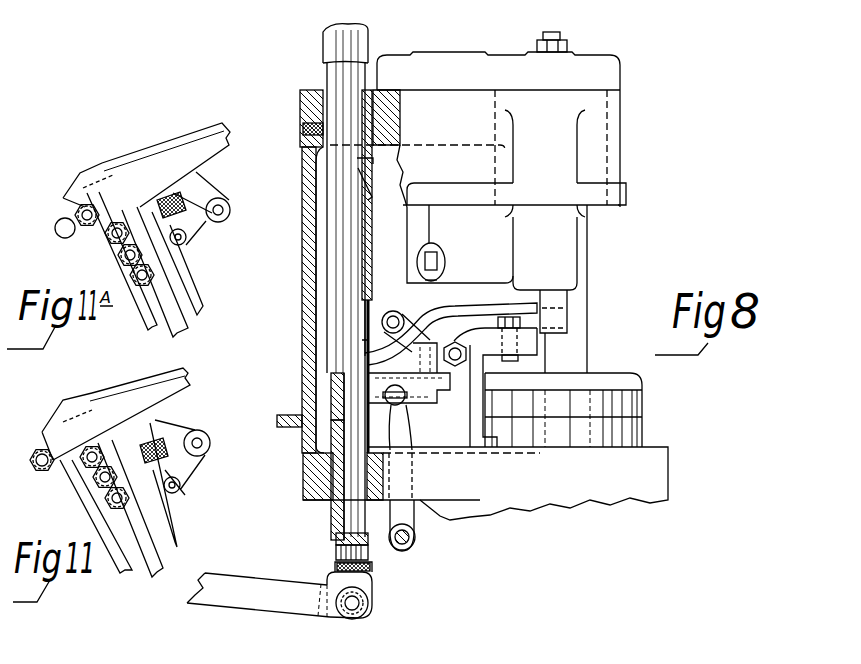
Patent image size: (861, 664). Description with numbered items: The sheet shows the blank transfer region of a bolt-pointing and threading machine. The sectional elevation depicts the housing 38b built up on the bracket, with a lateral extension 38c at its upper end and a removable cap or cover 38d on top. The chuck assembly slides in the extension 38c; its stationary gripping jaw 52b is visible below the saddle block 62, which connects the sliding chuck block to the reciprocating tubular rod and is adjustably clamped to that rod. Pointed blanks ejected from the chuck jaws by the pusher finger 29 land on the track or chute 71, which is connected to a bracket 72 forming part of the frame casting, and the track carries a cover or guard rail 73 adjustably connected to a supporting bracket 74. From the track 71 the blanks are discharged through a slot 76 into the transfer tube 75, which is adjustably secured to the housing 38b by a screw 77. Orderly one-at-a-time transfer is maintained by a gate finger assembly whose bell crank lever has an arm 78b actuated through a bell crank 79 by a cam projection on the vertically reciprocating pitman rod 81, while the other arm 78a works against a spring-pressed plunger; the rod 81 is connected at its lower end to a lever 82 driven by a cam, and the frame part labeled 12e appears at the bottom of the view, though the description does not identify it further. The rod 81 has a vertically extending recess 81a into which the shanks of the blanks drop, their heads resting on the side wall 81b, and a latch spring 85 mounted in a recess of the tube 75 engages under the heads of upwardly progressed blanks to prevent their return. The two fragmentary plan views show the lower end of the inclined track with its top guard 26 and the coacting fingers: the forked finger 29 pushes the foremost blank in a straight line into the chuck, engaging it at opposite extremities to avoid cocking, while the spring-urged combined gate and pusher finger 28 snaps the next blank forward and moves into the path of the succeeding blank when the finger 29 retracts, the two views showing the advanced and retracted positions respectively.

In FIG. 11A, the finger 29 is at (147, 175).
In FIG. 11, the finger 29 is at (113, 417).
In FIG. 11A, the combined gate and pusher finger 28 is at (105, 220).
In FIG. 11, the combined gate and pusher finger 28 is at (160, 497).
In FIG. 11A, the top guard 26 is at (181, 329).
In FIG. 11, the top guard 26 is at (147, 567).
In FIG. 8, the transfer tube 75 is at (326, 222).
In FIG. 8, the housing 38b is at (303, 305).
In FIG. 8, the lateral extension 38c is at (472, 100).
In FIG. 8, the removable cap or cover 38d is at (602, 66).
In FIG. 8, the screw 77 is at (303, 125).
In FIG. 8, the latch spring 85 is at (357, 161).
In FIG. 8, the slot 76 is at (363, 338).
In FIG. 8, the pitman rod 81 is at (336, 530).
In FIG. 8, the vertically extending recess 81a is at (342, 468).
In FIG. 8, the side wall 81b is at (331, 382).
In FIG. 8, the saddle block 62 is at (497, 241).
In FIG. 8, the gripping jaw 52b is at (568, 302).
In FIG. 8, the track or chute 71 is at (532, 341).
In FIG. 8, the bracket 72 is at (467, 420).
In FIG. 8, the base 12e is at (517, 555).
In FIG. 8, the supporting bracket 74 is at (392, 310).
In FIG. 8, the cover or guard rail 73 is at (428, 325).
In FIG. 8, the arm 78a is at (391, 404).
In FIG. 8, the arm 78b is at (423, 416).
In FIG. 8, the bell crank 79 is at (412, 518).
In FIG. 8, the lever 82 is at (248, 598).